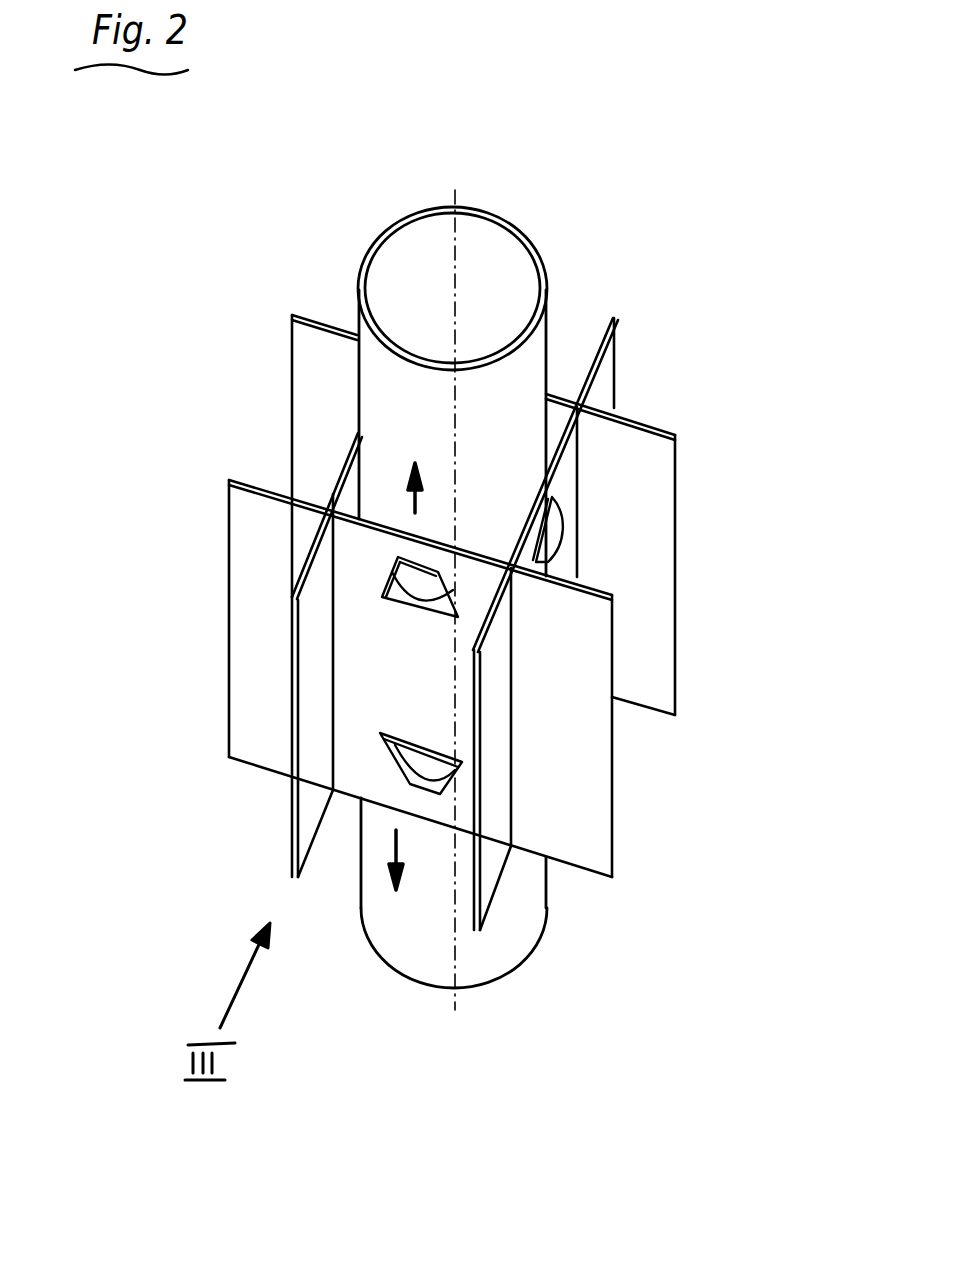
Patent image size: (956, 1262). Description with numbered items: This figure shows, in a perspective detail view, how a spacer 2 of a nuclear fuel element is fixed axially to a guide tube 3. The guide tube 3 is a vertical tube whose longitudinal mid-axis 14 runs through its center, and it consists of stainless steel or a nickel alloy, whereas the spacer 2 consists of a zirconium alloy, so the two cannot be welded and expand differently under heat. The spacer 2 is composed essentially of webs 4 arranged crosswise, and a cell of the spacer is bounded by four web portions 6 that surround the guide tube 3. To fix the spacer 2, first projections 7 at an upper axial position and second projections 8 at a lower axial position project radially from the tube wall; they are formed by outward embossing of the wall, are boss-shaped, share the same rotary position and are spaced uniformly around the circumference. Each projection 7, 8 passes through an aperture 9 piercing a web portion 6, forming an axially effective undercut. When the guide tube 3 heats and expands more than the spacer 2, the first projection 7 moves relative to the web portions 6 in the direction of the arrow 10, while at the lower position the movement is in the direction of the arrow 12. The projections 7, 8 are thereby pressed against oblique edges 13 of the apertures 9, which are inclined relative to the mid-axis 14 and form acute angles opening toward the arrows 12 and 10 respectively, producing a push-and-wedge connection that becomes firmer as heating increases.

The spacer 2 is at (705, 514).
The guide tube 3 is at (374, 250).
The web 4 is at (613, 322).
The web portion 6 is at (343, 482).
The first projection 7 is at (418, 583).
The second projection 8 is at (423, 763).
The aperture 9 is at (383, 573).
The arrow 10 is at (440, 480).
The arrow 12 is at (361, 895).
The oblique edge 13 is at (387, 587).
The longitudinal mid-axis 14 is at (466, 258).